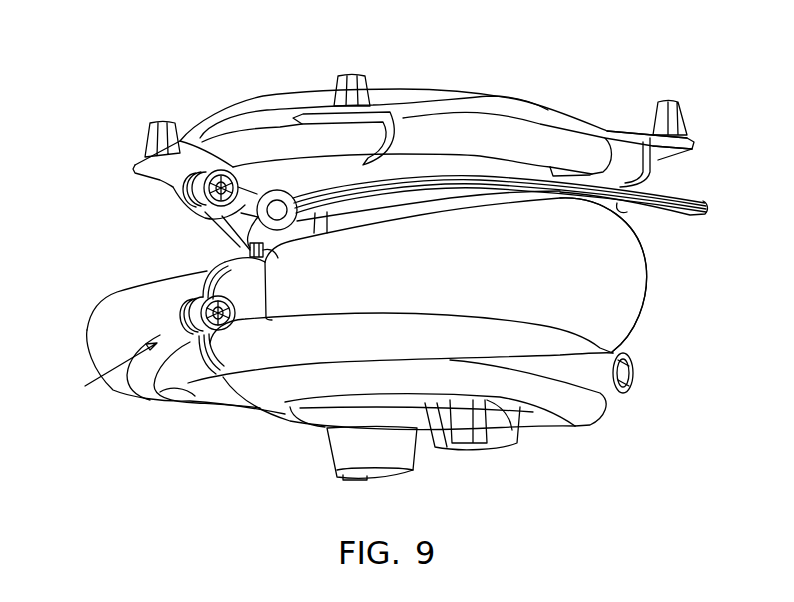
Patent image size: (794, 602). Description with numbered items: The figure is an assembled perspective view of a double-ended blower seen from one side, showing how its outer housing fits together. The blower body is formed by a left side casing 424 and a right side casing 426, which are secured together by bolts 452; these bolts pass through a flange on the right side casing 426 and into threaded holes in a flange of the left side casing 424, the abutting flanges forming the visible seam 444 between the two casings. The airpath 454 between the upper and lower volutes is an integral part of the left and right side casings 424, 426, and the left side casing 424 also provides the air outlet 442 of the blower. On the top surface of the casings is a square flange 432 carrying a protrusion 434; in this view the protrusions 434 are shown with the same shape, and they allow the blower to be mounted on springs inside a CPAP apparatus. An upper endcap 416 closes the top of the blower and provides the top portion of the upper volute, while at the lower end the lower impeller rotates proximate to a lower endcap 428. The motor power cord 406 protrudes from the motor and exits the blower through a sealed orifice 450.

The motor power cord 406 is at (703, 200).
The upper endcap 416 is at (466, 105).
The left side casing 424 is at (98, 377).
The right side casing 426 is at (606, 262).
The lower endcap 428 is at (329, 428).
The square flange 432 is at (610, 132).
The protrusion 434 is at (157, 138).
The air outlet 442 is at (95, 343).
The seam 444 is at (213, 280).
The sealed orifice 450 is at (252, 223).
The bolts 452 is at (203, 193).
The airpath 454 is at (617, 298).